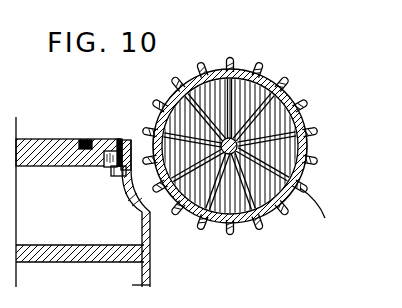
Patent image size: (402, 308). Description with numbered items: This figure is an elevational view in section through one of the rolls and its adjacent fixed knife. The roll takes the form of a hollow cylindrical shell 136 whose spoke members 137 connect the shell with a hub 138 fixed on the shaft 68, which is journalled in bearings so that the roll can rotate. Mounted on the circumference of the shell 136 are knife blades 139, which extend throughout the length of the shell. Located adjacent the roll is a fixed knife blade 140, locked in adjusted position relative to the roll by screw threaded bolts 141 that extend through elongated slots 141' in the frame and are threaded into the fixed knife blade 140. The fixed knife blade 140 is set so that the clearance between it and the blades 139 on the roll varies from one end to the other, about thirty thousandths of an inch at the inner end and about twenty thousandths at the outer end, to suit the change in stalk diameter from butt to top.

The shaft 68 is at (214, 149).
The hollow cylindrical shell 136 is at (300, 173).
The spoke members 137 is at (247, 221).
The hub 138 is at (297, 122).
The knife blades 139 is at (278, 208).
The fixed knife blade 140 is at (103, 139).
The screw threaded bolts 141 is at (106, 196).
The elongated slots 141' is at (80, 176).